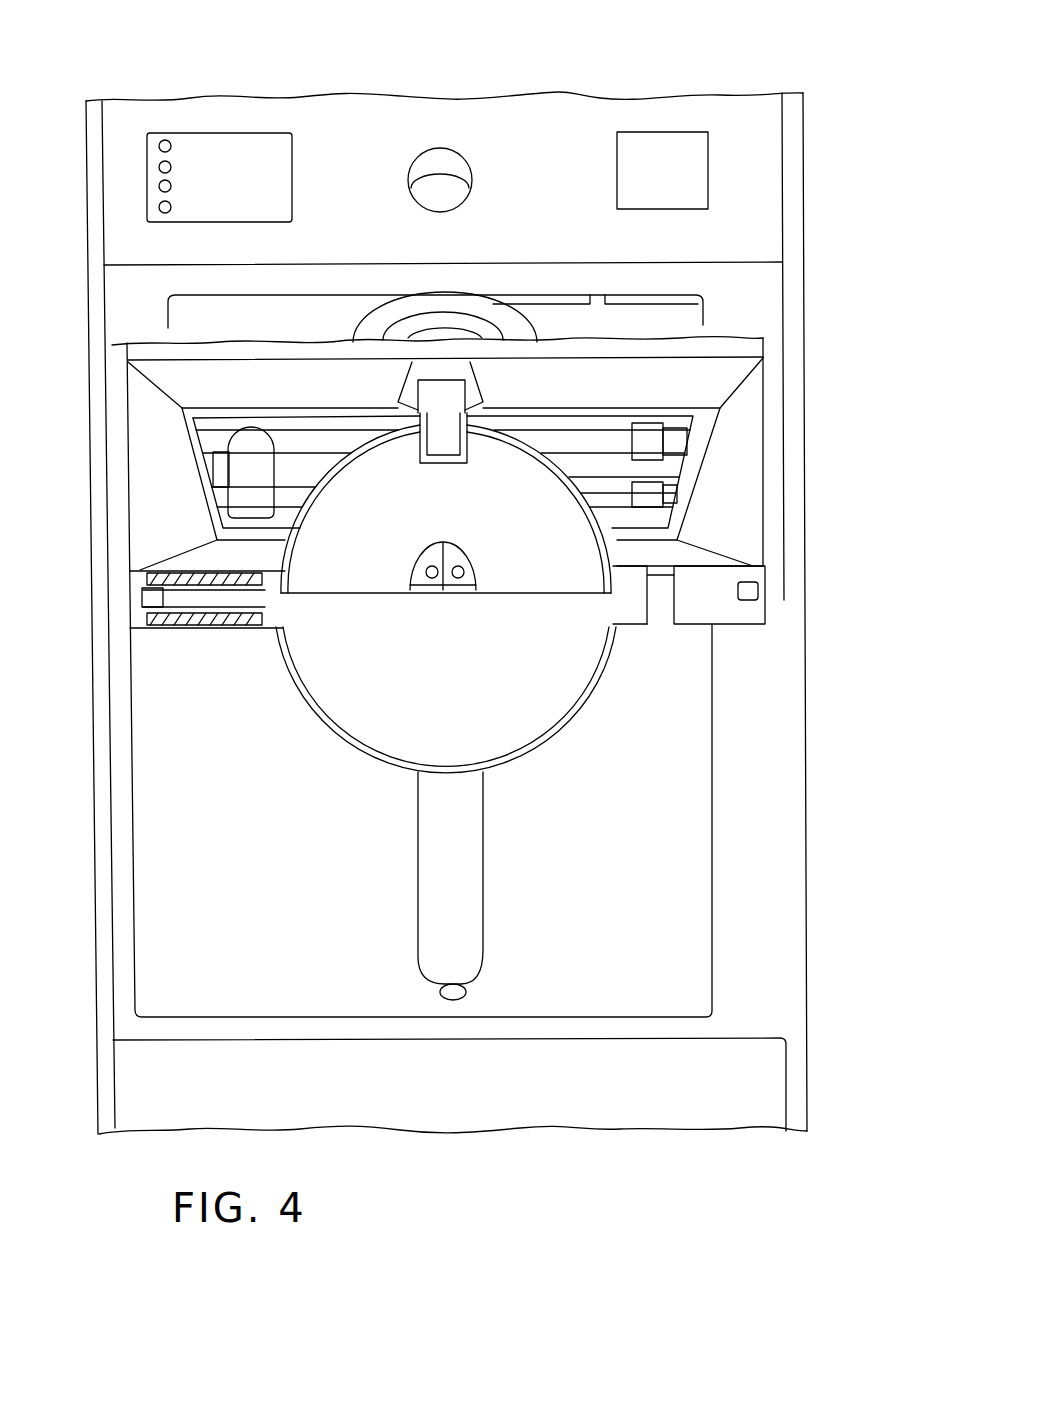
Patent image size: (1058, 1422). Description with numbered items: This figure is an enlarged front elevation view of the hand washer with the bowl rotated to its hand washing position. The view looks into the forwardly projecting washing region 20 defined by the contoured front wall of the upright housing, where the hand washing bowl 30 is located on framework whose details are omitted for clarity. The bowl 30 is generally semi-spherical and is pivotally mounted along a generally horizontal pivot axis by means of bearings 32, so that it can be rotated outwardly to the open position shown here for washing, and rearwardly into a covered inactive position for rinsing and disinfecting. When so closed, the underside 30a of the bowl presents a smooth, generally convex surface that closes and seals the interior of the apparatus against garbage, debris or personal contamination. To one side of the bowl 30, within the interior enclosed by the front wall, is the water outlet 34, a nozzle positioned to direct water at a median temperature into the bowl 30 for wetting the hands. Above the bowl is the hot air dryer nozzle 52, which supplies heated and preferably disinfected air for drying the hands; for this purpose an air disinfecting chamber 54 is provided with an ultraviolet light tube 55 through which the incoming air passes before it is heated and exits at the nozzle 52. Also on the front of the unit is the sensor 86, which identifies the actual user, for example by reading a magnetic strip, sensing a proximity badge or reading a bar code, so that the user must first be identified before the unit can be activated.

The washing region 20 is at (770, 847).
The hand washing bowl 30 is at (377, 590).
The underside of the bowl 30a is at (592, 700).
The bearings 32 is at (660, 600).
The water outlet 34 is at (443, 428).
The hot air dryer nozzle 52 is at (446, 190).
The air disinfecting chamber 54 is at (613, 537).
The ultraviolet light tube 55 is at (587, 440).
The sensor 86 is at (630, 169).